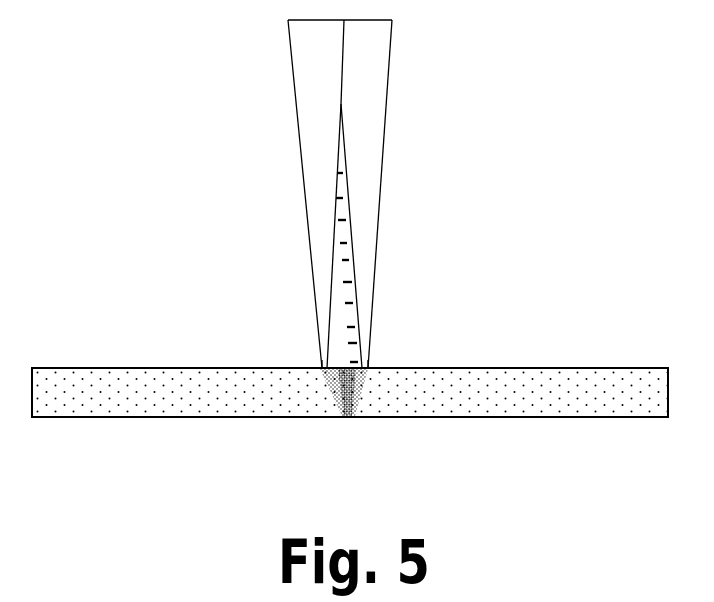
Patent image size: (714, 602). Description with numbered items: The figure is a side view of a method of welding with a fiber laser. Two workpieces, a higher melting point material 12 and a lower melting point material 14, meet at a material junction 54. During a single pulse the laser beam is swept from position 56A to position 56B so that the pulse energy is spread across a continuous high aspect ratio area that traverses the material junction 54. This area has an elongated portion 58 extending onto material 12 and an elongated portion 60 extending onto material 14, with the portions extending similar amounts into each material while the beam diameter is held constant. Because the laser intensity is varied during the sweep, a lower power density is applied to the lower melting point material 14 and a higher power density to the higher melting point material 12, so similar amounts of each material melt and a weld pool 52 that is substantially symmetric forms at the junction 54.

The material 12 is at (166, 367).
The material 14 is at (533, 367).
The weld pool 52 is at (341, 392).
The material junction 54 is at (344, 418).
The laser beam position 56A is at (307, 141).
The laser beam position 56B is at (377, 123).
The elongated portion 58 is at (322, 367).
The elongated portion 60 is at (368, 367).